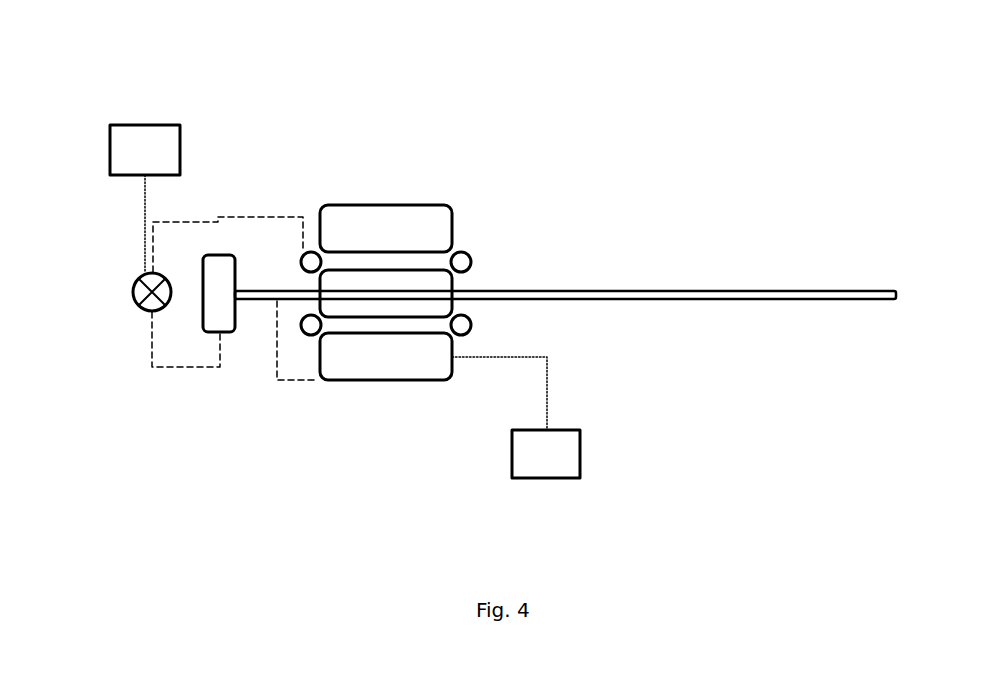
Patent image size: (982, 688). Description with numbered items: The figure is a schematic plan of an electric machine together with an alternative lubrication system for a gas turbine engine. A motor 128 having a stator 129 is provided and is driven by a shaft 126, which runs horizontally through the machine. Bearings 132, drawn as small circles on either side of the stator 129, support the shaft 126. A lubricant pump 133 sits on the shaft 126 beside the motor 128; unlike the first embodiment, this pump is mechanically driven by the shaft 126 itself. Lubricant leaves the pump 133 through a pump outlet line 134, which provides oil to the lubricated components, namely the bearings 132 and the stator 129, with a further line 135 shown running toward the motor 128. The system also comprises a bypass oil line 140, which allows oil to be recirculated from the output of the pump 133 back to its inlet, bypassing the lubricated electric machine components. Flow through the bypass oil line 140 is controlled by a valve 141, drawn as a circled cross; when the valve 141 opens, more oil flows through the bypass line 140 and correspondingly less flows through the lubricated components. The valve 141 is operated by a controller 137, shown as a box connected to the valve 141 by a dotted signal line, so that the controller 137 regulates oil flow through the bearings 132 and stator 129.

The shaft 126 is at (638, 290).
The motor 128 is at (473, 297).
The stator 129 is at (355, 205).
The bearings 132 is at (465, 253).
The lubricant pump 133 is at (220, 333).
The pump outlet line 134 is at (277, 382).
The control line 135 is at (262, 216).
The controller 137 is at (180, 125).
The bypass oil line 140 is at (152, 367).
The valve 141 is at (133, 292).